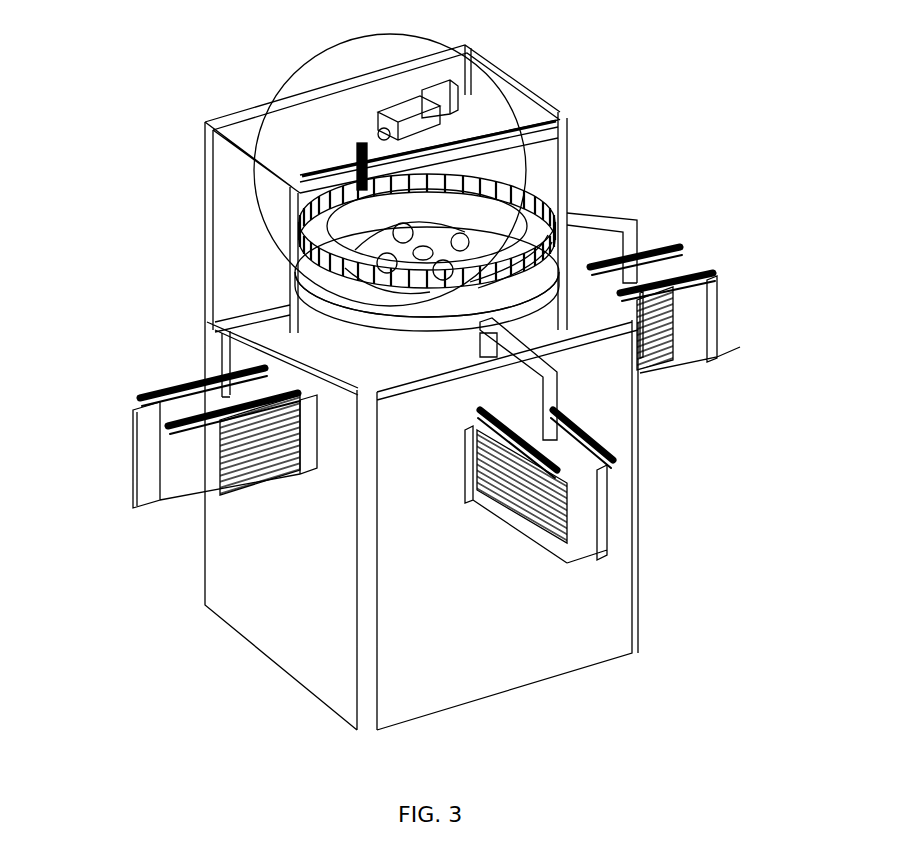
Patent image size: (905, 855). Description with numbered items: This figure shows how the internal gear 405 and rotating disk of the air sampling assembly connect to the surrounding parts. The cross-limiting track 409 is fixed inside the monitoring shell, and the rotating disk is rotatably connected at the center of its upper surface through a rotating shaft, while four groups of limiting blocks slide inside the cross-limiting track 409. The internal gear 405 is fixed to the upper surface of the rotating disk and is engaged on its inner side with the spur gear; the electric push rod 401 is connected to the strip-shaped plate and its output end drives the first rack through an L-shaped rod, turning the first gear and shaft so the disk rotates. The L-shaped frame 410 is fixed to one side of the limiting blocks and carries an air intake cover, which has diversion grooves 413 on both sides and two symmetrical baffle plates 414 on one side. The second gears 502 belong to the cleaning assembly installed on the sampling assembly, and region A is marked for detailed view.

The electric push rod 401 is at (440, 105).
The detail region A is at (225, 153).
The internal gear 405 is at (560, 220).
The cross-limiting track 409 is at (288, 310).
The L-shaped frame 410 is at (215, 368).
The diversion grooves 413 is at (160, 490).
The second gears 502 is at (150, 432).
The baffle plates 414 is at (705, 332).